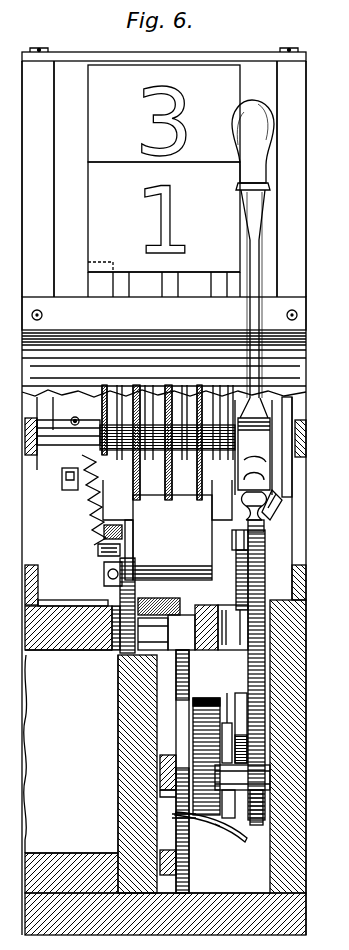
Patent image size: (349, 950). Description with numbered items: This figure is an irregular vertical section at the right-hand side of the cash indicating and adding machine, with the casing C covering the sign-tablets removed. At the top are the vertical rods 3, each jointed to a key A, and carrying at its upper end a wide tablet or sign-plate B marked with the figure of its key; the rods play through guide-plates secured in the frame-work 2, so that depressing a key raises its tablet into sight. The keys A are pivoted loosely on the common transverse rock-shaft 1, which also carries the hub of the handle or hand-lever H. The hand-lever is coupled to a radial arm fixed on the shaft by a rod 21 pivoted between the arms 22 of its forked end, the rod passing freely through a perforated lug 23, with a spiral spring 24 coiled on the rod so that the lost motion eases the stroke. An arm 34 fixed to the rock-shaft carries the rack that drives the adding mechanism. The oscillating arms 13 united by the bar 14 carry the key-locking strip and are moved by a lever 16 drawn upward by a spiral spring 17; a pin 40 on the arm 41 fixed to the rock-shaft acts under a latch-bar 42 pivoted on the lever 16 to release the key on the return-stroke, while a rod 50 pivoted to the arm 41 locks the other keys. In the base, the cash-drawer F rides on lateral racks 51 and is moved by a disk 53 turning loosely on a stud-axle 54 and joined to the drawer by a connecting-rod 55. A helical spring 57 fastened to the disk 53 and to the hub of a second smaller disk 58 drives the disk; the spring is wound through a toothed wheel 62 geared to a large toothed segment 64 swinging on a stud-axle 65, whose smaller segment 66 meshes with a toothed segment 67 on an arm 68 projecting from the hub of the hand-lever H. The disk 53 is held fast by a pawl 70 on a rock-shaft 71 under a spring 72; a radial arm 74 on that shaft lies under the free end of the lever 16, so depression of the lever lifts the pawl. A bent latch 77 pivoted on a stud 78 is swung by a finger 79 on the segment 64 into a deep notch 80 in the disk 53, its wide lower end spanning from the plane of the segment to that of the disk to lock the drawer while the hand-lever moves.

The rock-shaft 1 is at (300, 432).
The frame-work 2 is at (164, 179).
The vertical rod 3 is at (164, 284).
The oscillating arms 13 is at (212, 492).
The bar or plate 14 is at (172, 537).
The lever 16 is at (134, 540).
The spiral spring 17 is at (86, 500).
The rod 21 is at (255, 468).
The arms of the fork 22 is at (253, 446).
The perforated lug 23 is at (245, 532).
The spiral spring 24 is at (246, 512).
The arm 34 is at (55, 399).
The pin 40 is at (119, 605).
The arm 41 is at (92, 575).
The latch-bar 42 is at (98, 549).
The rod 50 is at (62, 478).
The lateral racks 51 is at (167, 854).
The disk 53 is at (180, 712).
The stud-axle 54 is at (172, 756).
The connecting-rod 55 is at (167, 799).
The helical spring 57 is at (206, 756).
The second smaller disk 58 is at (225, 721).
The toothed wheel 62 is at (259, 816).
The large toothed segment 64 is at (266, 712).
The stud-axle 65 is at (266, 630).
The second smaller toothed segment 66 is at (266, 585).
The toothed segment 67 is at (266, 548).
The arm 68 is at (284, 506).
The pawl 70 is at (193, 627).
The rock-shaft 71 is at (153, 634).
The spring 72 is at (168, 592).
The radial arm 74 is at (113, 651).
The bent latch 77 is at (236, 832).
The stud 78 is at (234, 791).
The finger 79 is at (250, 745).
The deep notch 80 is at (177, 821).
The key A is at (167, 443).
The tablet or sign-plate B is at (164, 168).
The casing C is at (164, 365).
The cash-drawer F is at (71, 754).
The handle or hand-lever H is at (253, 249).